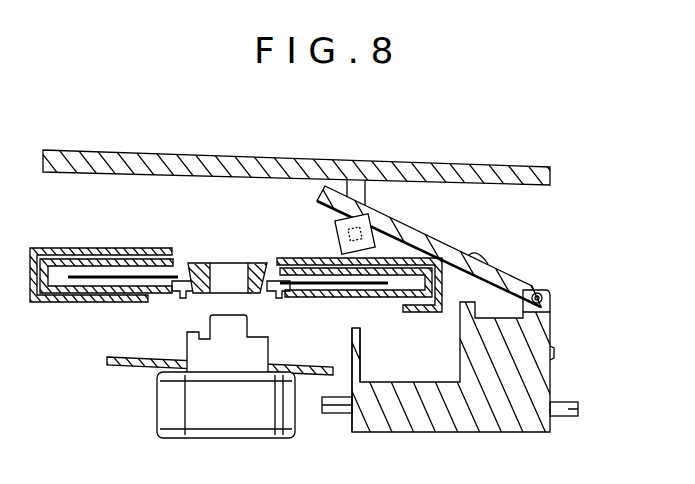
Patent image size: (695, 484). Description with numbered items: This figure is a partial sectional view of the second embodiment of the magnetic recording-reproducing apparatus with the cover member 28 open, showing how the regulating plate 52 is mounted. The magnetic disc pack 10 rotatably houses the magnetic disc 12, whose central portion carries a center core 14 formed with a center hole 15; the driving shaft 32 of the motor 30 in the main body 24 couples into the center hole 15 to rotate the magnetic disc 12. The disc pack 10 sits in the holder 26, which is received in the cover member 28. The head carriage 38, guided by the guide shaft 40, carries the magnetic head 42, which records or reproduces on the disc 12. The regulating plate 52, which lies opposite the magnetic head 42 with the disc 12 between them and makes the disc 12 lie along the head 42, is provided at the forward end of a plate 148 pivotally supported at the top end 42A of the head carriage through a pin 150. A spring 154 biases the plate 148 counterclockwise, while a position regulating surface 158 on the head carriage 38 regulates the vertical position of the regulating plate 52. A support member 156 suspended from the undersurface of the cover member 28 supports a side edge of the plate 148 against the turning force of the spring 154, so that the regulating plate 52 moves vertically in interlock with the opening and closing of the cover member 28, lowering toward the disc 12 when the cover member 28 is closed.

The magnetic disc pack 10 is at (112, 262).
The magnetic disc 12 is at (118, 298).
The center core 14 is at (207, 264).
The center hole 15 is at (226, 264).
The main body 24 is at (306, 366).
The holder 26 is at (55, 303).
The cover member 28 is at (494, 172).
The motor 30 is at (235, 414).
The driving shaft 32 is at (216, 323).
The head carriage 38 is at (476, 420).
The guide shaft 40 is at (574, 405).
The magnetic head 42 is at (353, 330).
The top end of the head carriage 42A is at (553, 312).
The regulating plate 52 is at (335, 232).
The plate 148 is at (435, 246).
The pin 150 is at (540, 292).
The spring 154 is at (553, 352).
The support member 156 is at (357, 192).
The position regulating surface 158 is at (474, 260).